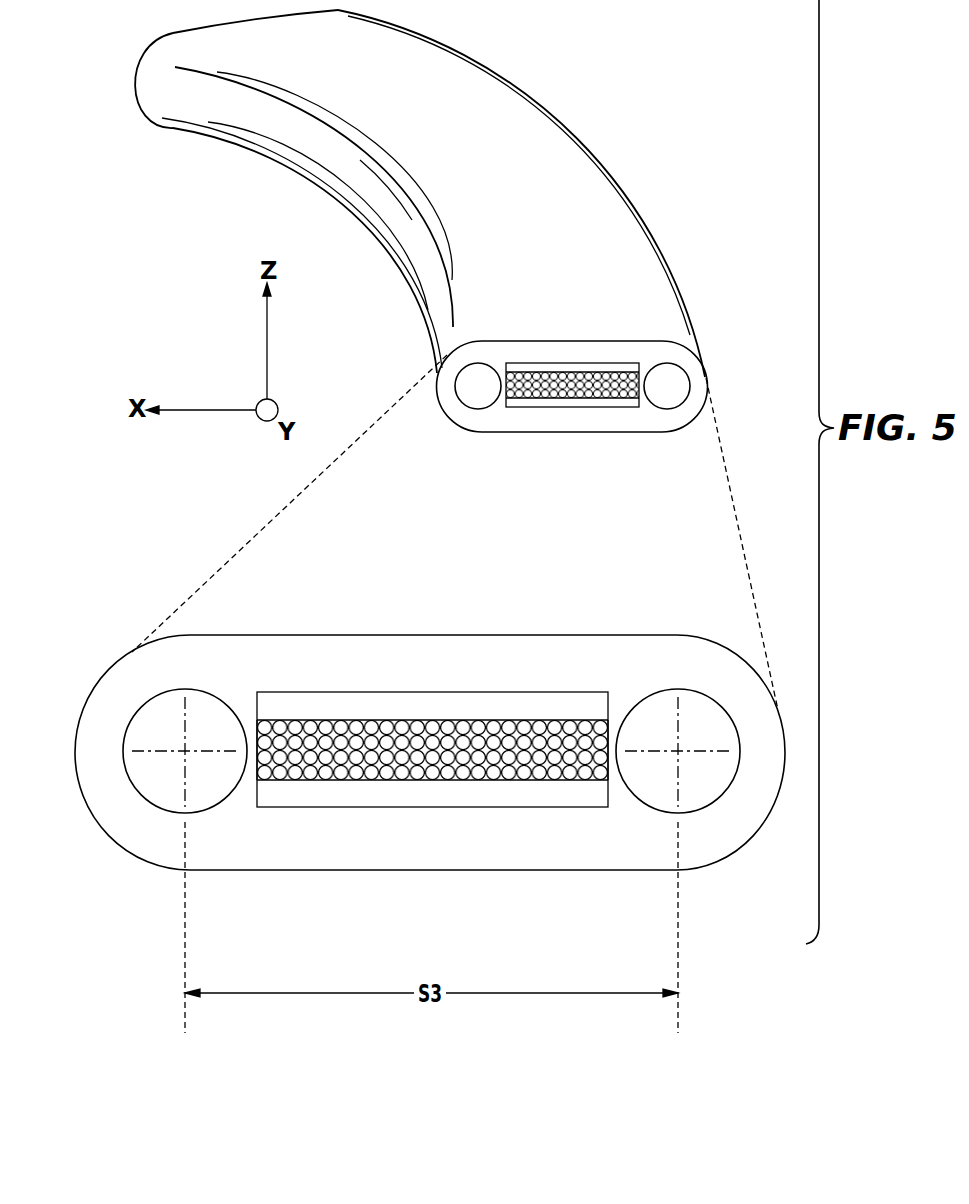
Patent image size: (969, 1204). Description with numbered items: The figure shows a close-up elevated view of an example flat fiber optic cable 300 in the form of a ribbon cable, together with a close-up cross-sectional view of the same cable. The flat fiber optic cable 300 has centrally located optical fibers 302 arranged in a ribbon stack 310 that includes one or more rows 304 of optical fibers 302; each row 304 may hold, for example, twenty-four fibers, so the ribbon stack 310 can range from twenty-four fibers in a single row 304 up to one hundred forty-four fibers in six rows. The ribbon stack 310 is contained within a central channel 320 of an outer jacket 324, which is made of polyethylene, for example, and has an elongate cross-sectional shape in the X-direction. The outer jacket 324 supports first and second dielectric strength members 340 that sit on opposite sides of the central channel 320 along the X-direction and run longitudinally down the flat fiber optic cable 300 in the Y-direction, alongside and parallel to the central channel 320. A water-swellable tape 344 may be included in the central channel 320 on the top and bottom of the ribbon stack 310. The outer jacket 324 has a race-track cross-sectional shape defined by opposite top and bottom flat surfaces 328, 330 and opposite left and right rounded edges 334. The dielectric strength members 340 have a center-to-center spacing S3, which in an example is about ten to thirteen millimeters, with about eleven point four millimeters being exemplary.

The flat fiber optic cable 300 is at (622, 98).
The optical fibers 302 is at (262, 725).
The row of optical fibers 304 is at (612, 720).
The ribbon stack 310 is at (588, 410).
The central channel 320 is at (602, 363).
The outer jacket 324 is at (468, 97).
The top flat surface 328 is at (473, 635).
The bottom flat surface 330 is at (435, 872).
The rounded edges 334 is at (76, 748).
The dielectric strength members 340 is at (670, 182).
The water-swellable tape 344 is at (400, 710).